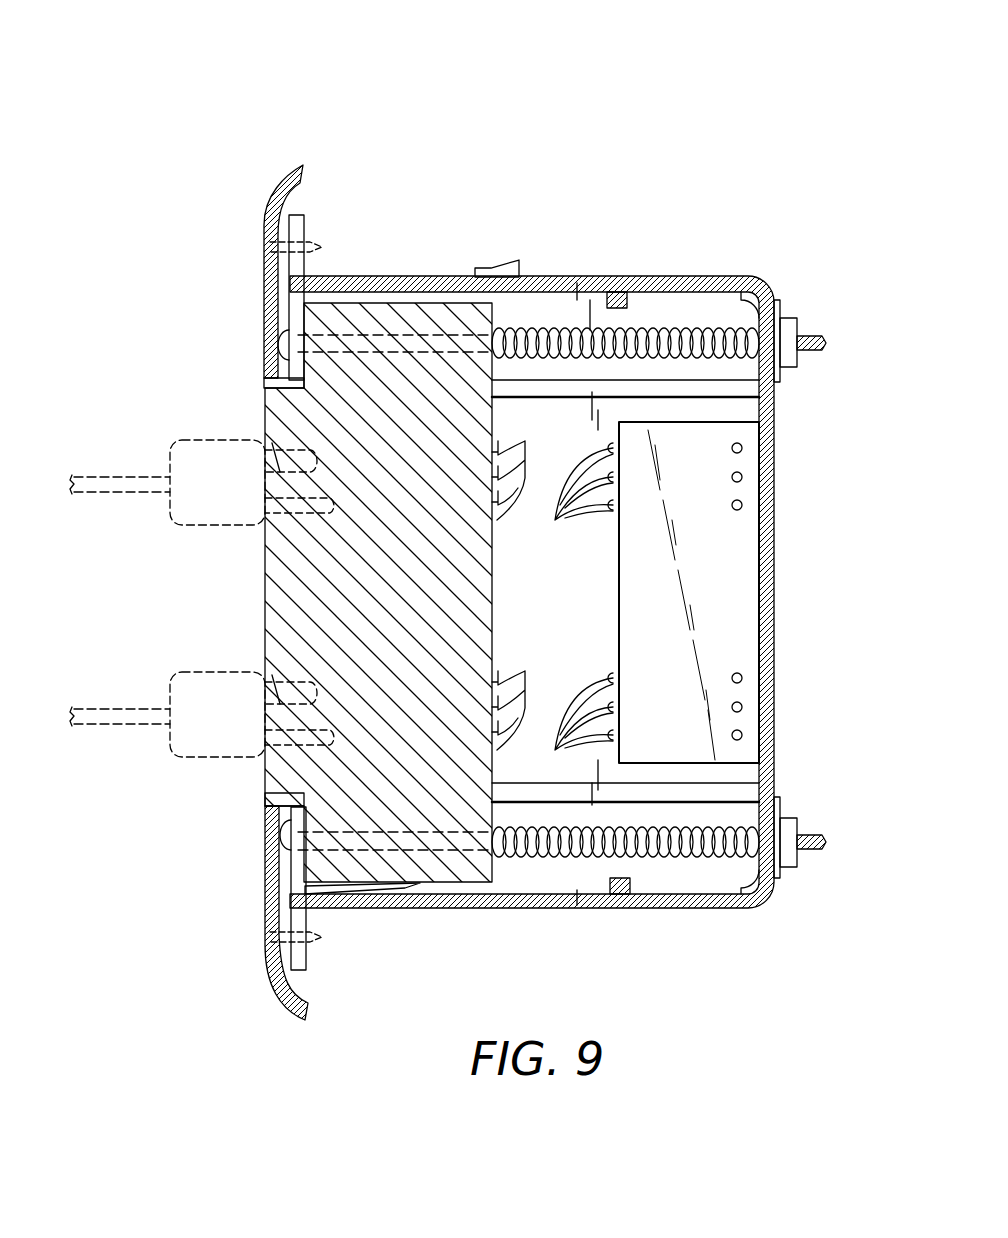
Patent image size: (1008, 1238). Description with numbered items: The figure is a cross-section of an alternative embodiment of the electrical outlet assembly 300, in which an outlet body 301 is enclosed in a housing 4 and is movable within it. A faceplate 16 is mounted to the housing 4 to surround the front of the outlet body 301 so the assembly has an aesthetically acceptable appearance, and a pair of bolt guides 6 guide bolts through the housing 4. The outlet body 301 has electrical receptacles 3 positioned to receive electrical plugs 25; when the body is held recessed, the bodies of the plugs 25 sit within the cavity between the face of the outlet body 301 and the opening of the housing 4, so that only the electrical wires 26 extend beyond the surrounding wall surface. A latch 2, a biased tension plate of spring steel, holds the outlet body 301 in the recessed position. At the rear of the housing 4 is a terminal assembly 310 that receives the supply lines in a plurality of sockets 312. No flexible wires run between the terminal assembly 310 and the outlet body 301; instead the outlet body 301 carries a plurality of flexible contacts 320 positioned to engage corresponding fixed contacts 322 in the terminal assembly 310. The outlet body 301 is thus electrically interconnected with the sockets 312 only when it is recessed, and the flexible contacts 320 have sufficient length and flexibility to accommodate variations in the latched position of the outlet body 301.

The electrical outlet assembly 300 is at (538, 157).
The housing 4 is at (563, 278).
The faceplate 16 is at (285, 182).
The bolt guides 6 is at (296, 323).
The outlet body 301 is at (452, 553).
The latch 2 is at (369, 895).
The electrical receptacles 3 is at (265, 420).
The electrical plugs 25 is at (245, 515).
The electrical wires 26 is at (84, 488).
The terminal assembly 310 is at (742, 598).
The sockets 312 is at (742, 448).
The fixed contacts 322 is at (567, 616).
The flexible contacts 320 is at (527, 577).